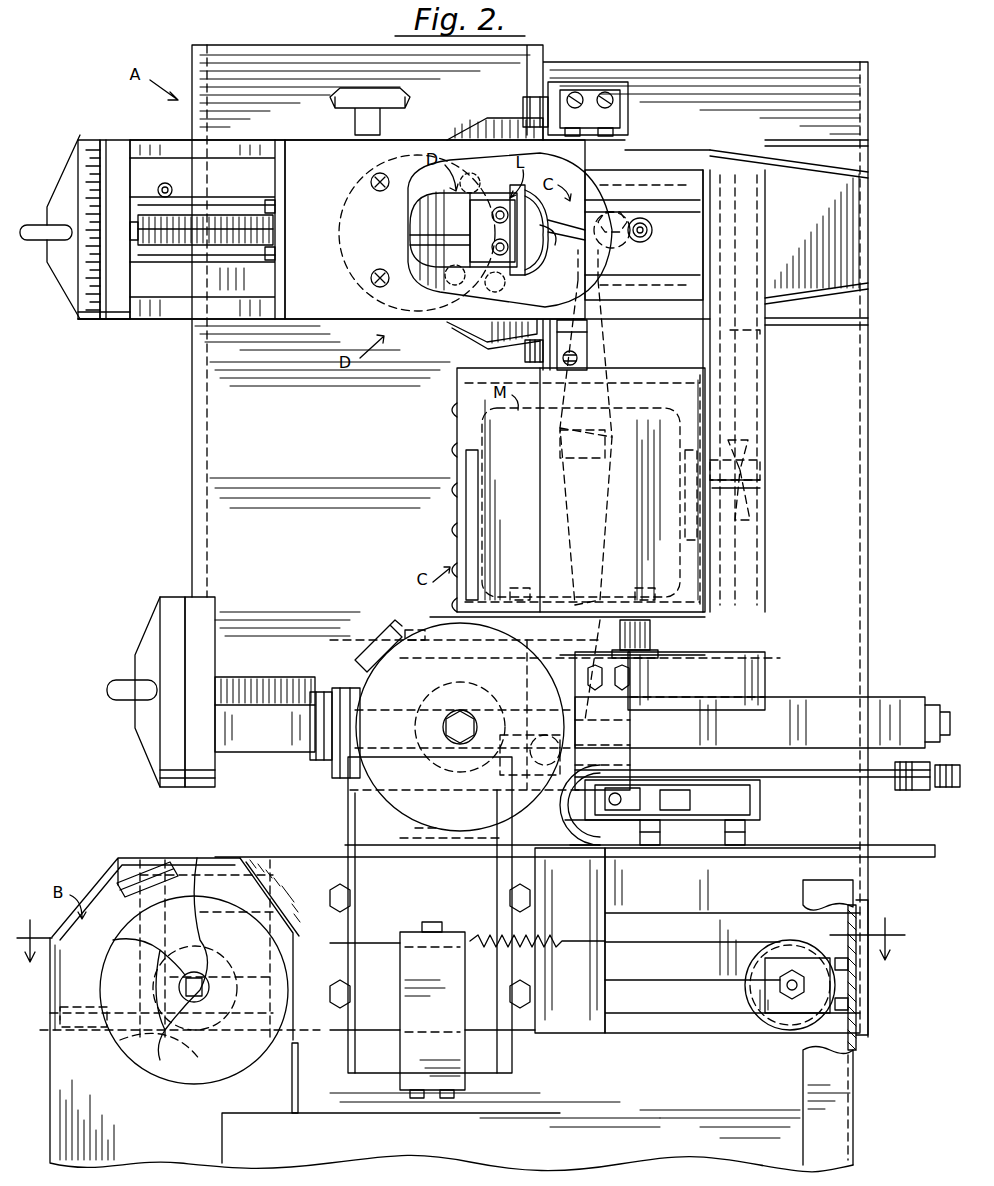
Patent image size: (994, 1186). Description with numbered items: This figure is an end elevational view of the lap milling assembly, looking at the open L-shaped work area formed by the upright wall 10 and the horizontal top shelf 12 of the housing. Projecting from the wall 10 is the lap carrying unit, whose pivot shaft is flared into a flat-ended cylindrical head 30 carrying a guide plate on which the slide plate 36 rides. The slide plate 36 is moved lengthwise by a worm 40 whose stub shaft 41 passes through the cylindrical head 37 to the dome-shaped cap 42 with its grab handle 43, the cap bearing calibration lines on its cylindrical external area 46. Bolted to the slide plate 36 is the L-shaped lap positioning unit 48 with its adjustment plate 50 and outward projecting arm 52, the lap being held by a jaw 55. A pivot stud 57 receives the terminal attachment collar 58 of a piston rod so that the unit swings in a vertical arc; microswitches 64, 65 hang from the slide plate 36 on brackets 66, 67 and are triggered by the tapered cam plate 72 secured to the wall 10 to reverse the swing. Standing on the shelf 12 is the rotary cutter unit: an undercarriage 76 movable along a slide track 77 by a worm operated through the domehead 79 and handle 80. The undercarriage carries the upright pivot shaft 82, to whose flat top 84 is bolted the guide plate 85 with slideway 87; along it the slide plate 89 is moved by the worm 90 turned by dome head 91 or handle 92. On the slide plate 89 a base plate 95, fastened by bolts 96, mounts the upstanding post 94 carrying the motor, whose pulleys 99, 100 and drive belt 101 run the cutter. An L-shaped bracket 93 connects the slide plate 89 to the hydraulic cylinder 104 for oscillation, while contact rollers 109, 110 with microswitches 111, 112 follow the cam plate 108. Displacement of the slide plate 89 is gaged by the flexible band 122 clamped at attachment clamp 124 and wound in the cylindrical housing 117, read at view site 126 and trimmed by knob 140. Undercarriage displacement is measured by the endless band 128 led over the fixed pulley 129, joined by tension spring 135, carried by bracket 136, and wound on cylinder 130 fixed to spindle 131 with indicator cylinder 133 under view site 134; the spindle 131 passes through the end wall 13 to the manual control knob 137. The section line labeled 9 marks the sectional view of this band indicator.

The upright wall 10 is at (473, 541).
The cylindrical external area 46 is at (88, 140).
The cylindrical head 37 is at (130, 140).
The slide plate 36 is at (229, 229).
The cylindrical head 30 is at (365, 172).
The stub shaft 41 is at (132, 235).
The screw or worm 40 is at (185, 243).
The operating pin or grab handle 43 is at (40, 240).
The cap or end member 42 is at (90, 322).
The microswitch 64 is at (618, 100).
The bracket 66 is at (620, 115).
The lap positioning unit 48 is at (436, 293).
The outward projecting arm 52 is at (428, 228).
The jaw 55 is at (476, 183).
The adjustment plate 50 is at (563, 172).
The terminal attachment collar 58 is at (648, 224).
The handle 92 is at (620, 223).
The pivot stud 57 is at (640, 240).
The tapered cam plate 72 is at (816, 214).
The pulley 100 is at (768, 243).
The microswitch 65 is at (524, 350).
The bracket 67 is at (580, 345).
The drive belt 101 is at (762, 348).
The pulley 99 is at (763, 478).
The upstanding post 94 is at (555, 668).
The bolt 96 is at (652, 630).
The view site 126 is at (360, 655).
The slide plate 89 is at (696, 681).
The L-shaped bracket 93 is at (622, 718).
The slideway 87 is at (822, 700).
The flexible band 122 is at (835, 777).
The attachment clamp 124 is at (918, 788).
The flat top 84 is at (398, 745).
The base plate 95 is at (560, 650).
The hollow cylindrical housing 117 is at (451, 763).
The hydraulic cylinder 104 is at (580, 788).
The microswitch 112 is at (630, 800).
The microswitch 111 is at (672, 800).
The contact roller 110 is at (650, 835).
The contact roller 109 is at (745, 835).
The cam plate 108 is at (848, 855).
The dome head 91 is at (155, 743).
The guide plate 85 is at (265, 714).
The worm 90 is at (280, 677).
The rotary operating knob 140 is at (305, 760).
The pivot shaft 82 is at (350, 775).
The horizontal top shelf 12 is at (282, 860).
The bracket 136 is at (432, 1010).
The tension spring 135 is at (492, 935).
The undercarriage 76 is at (570, 940).
The slide track 77 is at (732, 940).
The endless band 128 is at (665, 945).
The fixed pulley 129 is at (795, 1022).
The end wall 13 is at (451, 1026).
The cap or domehead 79 is at (115, 875).
The section line 9- 9 is at (461, 952).
The handle 80 is at (95, 1012).
The view site 134 is at (158, 878).
The indicator cylinder 133 is at (218, 1076).
The rotatable cylinder 130 is at (232, 956).
The spindle 131 is at (208, 992).
The manual control knob 137 is at (118, 1040).